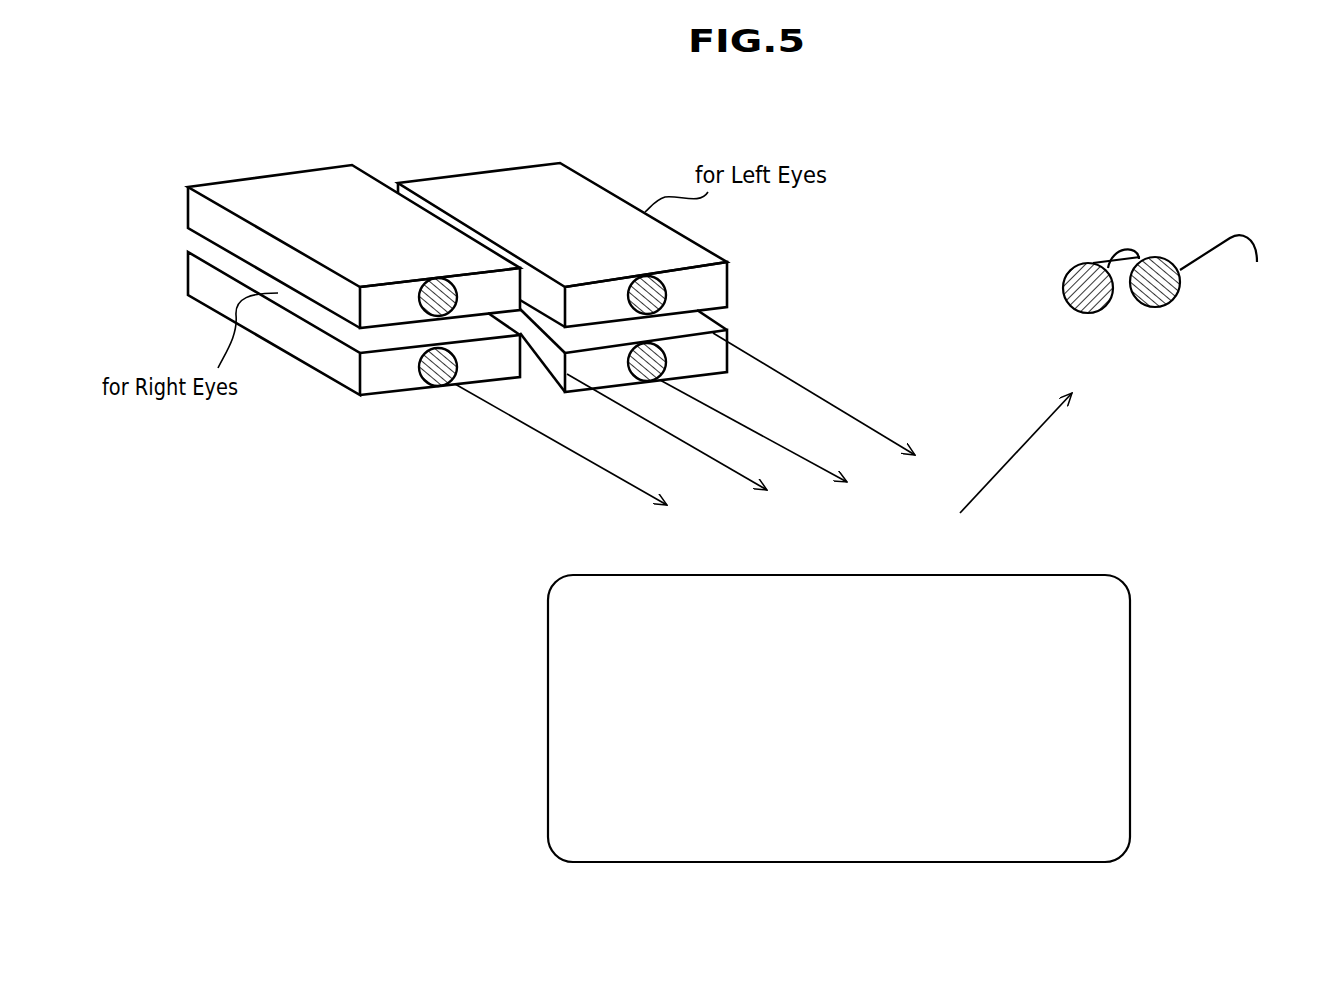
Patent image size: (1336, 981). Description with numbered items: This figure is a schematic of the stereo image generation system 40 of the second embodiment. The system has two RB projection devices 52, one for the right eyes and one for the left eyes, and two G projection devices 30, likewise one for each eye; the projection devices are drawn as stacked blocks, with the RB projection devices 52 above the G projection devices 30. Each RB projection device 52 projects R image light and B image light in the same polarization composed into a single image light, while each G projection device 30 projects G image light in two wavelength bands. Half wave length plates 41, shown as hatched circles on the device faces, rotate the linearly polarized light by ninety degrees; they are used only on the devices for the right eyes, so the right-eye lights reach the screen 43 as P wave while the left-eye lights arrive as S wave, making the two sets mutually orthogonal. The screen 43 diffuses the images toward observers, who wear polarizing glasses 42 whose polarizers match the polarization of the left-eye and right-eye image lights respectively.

The RB projection device 52 is at (307, 170).
The G projection device 30 is at (565, 392).
The half wave length plate 41 is at (419, 297).
The stereo image generation system 40 is at (960, 106).
The polarizing glasses 42 is at (1093, 263).
The screen 43 is at (548, 818).